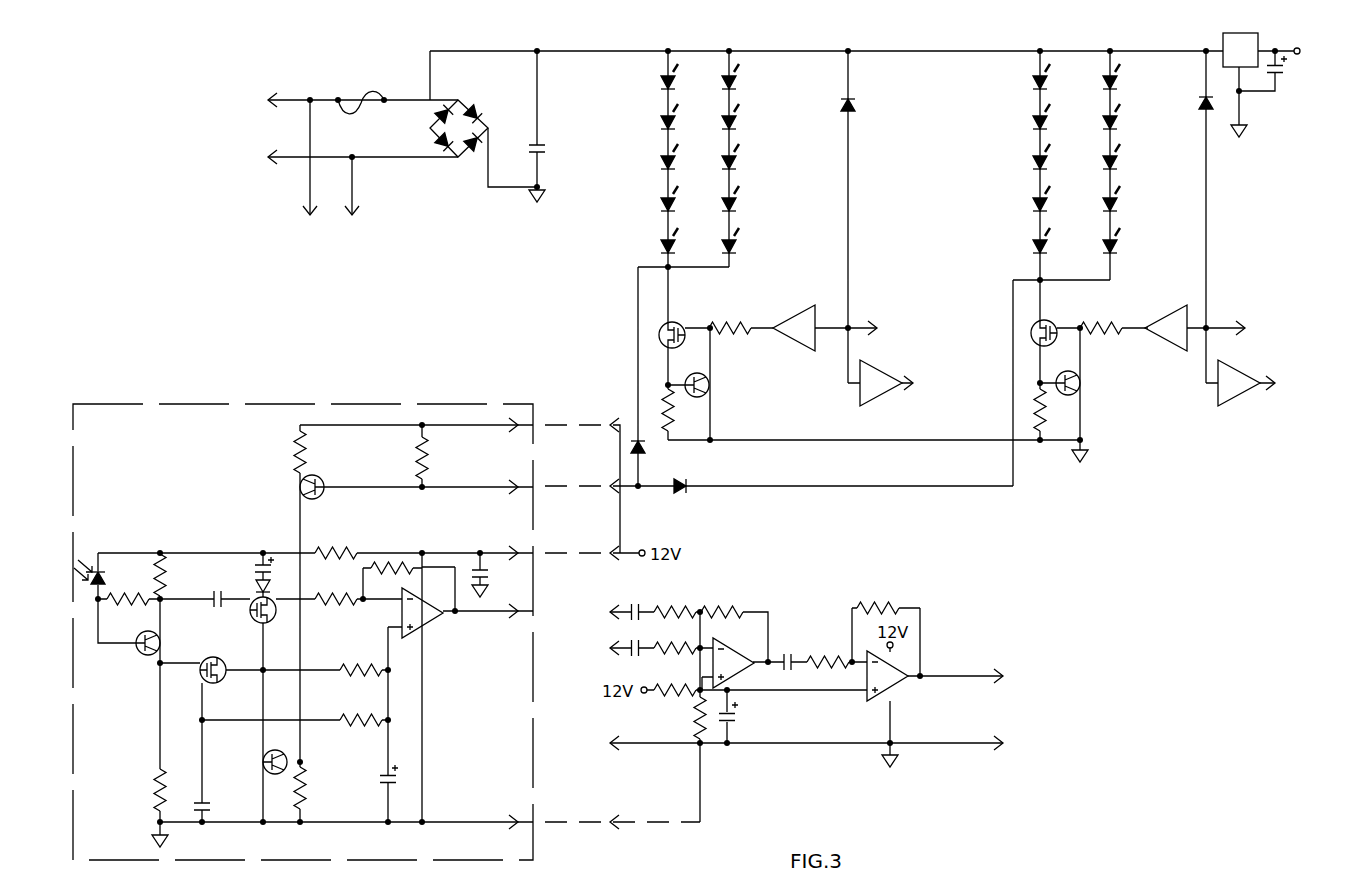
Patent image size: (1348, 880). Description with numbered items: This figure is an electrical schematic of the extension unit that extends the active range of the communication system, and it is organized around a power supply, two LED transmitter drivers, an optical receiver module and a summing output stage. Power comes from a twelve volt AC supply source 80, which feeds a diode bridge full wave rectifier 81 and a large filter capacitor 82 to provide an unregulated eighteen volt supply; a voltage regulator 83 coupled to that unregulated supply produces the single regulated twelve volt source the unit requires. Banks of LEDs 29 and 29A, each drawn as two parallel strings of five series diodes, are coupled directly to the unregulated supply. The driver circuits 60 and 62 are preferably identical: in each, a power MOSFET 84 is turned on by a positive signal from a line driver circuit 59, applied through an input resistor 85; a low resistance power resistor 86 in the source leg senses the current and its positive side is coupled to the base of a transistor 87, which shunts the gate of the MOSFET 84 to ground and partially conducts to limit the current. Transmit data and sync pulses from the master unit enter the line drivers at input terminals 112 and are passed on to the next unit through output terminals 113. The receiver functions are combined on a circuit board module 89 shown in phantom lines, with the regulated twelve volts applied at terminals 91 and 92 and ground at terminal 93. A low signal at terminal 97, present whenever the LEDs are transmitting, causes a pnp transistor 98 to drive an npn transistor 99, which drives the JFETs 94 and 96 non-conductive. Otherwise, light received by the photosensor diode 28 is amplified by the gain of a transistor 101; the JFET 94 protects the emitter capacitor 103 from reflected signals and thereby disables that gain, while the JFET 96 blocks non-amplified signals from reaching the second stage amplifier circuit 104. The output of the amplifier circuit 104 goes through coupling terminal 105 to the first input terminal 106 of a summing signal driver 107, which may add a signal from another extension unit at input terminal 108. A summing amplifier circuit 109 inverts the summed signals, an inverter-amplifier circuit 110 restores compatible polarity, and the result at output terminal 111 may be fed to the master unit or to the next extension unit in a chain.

The photosensor diode 28 is at (85, 572).
The LEDs 29 is at (760, 128).
The LEDs 29A is at (1014, 131).
The line driver circuit 59 is at (790, 345).
The driver circuit 60 is at (735, 500).
The driver circuit 62 is at (1084, 500).
The 12 volt AC supply source 80 is at (316, 90).
The diode bridge full wave rectifier 81 is at (458, 158).
The filter capacitor 82 is at (543, 147).
The 12 volt regulator 83 is at (1223, 40).
The MOSFET 84 is at (672, 322).
The input resistor 85 is at (742, 322).
The power resistor 86 is at (660, 420).
The transistor 87 is at (712, 395).
The circuit board module 89 is at (297, 404).
The regulated 12 volt supply terminal 91 is at (457, 424).
The regulated 12 volt supply terminal 92 is at (453, 553).
The ground terminal 93 is at (455, 822).
The JFET 94 is at (198, 677).
The JFET 96 is at (278, 612).
The terminal 97 is at (453, 485).
The pnp transistor 98 is at (298, 487).
The npn transistor 99 is at (282, 750).
The transistor 101 is at (148, 656).
The emitter capacitor 103 is at (212, 808).
The amplifier circuit 104 is at (438, 625).
The coupling terminal 105 is at (522, 612).
The first input terminal 106 is at (620, 610).
The summing signal driver 107 is at (811, 599).
The input terminal 108 is at (615, 652).
The amplifier circuit 109 is at (740, 687).
The inverter-amplifier circuit 110 is at (893, 687).
The output terminal 111 is at (947, 673).
The input terminal 112 is at (863, 322).
The output terminal 113 is at (905, 390).